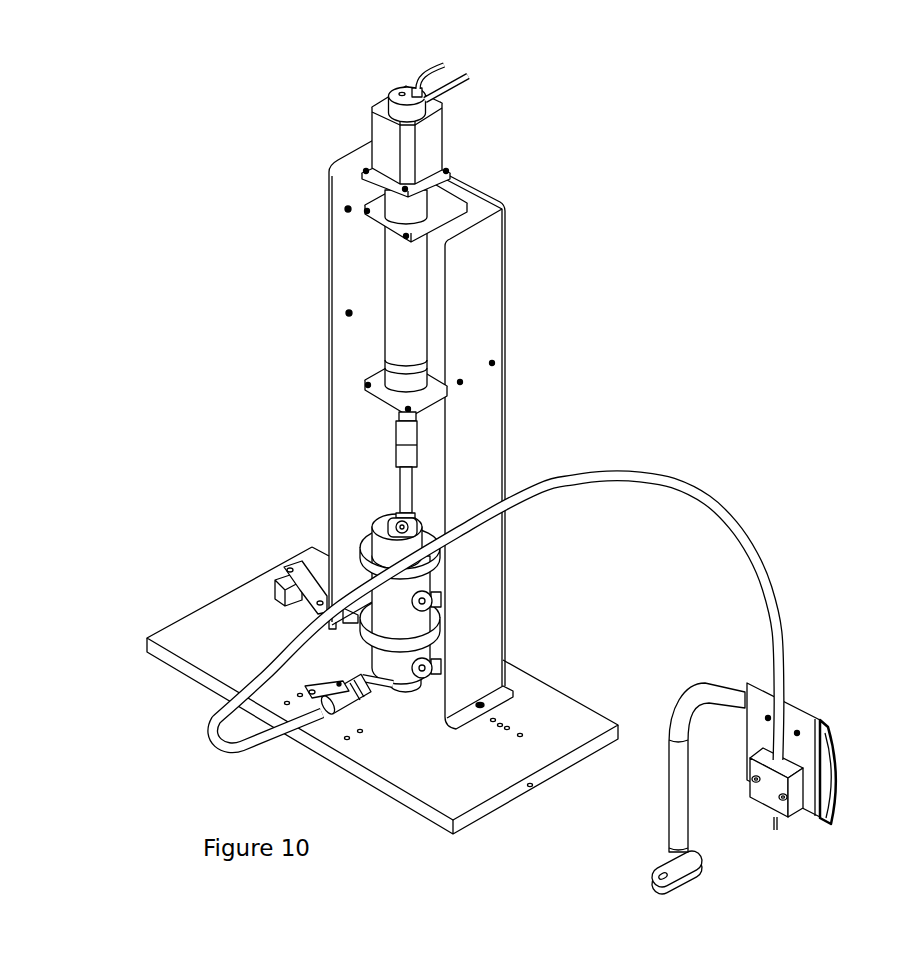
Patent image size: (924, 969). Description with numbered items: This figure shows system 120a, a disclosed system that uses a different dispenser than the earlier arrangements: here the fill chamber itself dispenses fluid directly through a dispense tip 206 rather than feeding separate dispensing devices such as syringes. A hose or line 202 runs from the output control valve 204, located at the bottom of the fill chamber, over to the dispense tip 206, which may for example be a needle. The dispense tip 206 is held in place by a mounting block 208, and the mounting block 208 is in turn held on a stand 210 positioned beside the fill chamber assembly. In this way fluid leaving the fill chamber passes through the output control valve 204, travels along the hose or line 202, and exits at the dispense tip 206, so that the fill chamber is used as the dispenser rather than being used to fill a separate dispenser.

The system 120a is at (278, 362).
The hose or line 202 is at (608, 471).
The output control valve 204 is at (352, 703).
The dispense tip 206 is at (776, 829).
The mounting block 208 is at (795, 790).
The stand 210 is at (668, 796).